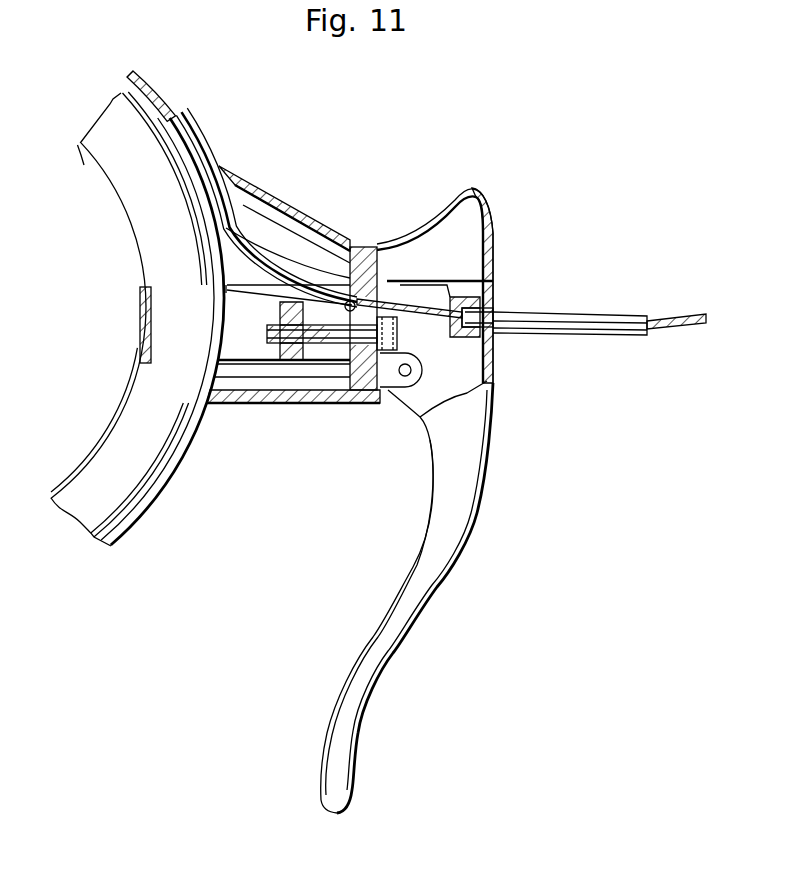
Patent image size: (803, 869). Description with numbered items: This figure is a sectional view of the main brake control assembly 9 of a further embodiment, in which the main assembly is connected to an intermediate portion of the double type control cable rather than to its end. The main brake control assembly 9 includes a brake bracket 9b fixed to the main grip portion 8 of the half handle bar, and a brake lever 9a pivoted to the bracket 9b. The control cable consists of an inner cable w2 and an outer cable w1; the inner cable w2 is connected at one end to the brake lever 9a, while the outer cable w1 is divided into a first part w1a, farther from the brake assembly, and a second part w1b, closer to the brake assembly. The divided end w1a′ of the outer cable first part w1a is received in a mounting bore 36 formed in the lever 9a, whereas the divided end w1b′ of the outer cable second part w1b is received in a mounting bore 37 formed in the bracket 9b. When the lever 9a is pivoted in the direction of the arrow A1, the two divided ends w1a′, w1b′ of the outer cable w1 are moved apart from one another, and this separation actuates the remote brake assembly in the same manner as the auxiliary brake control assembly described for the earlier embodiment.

The main grip portion 8 is at (147, 210).
The main brake control assembly 9 is at (508, 190).
The brake lever 9a is at (467, 537).
The brake bracket 9b is at (310, 220).
The mounting bore 36 is at (498, 335).
The mounting bore 37 is at (345, 312).
The outer cable w1 is at (613, 338).
The outer cable first part w1a is at (568, 317).
The divided end of outer cable first part w1a′ is at (497, 297).
The outer cable second part w1b is at (197, 132).
The divided end of outer cable second part w1b′ is at (350, 298).
The inner cable w2 is at (683, 331).
The arrow indicating pivotal movement direction A1 is at (320, 673).